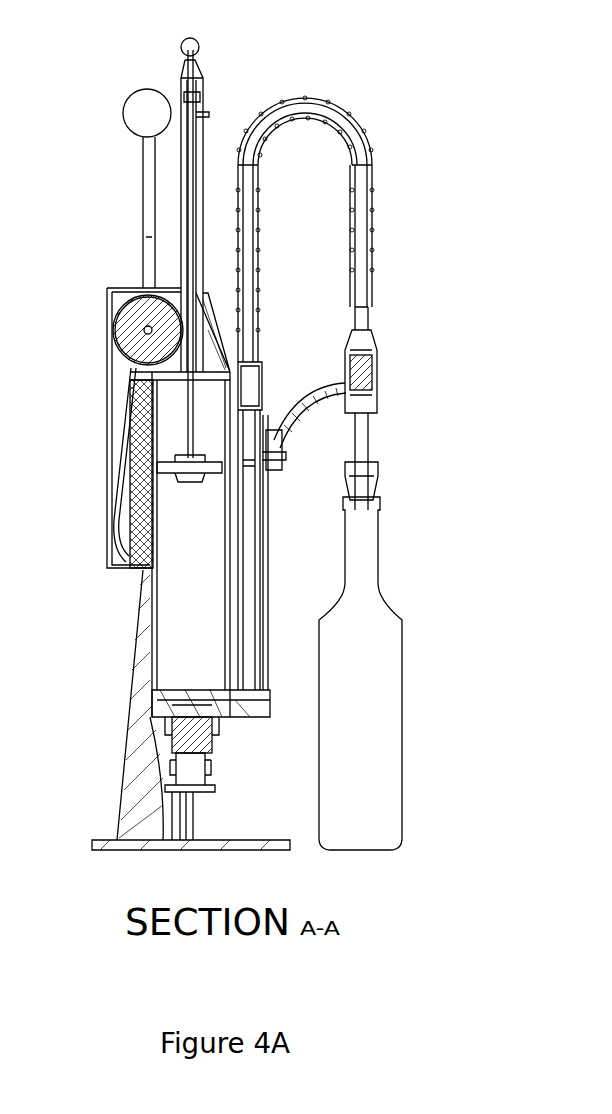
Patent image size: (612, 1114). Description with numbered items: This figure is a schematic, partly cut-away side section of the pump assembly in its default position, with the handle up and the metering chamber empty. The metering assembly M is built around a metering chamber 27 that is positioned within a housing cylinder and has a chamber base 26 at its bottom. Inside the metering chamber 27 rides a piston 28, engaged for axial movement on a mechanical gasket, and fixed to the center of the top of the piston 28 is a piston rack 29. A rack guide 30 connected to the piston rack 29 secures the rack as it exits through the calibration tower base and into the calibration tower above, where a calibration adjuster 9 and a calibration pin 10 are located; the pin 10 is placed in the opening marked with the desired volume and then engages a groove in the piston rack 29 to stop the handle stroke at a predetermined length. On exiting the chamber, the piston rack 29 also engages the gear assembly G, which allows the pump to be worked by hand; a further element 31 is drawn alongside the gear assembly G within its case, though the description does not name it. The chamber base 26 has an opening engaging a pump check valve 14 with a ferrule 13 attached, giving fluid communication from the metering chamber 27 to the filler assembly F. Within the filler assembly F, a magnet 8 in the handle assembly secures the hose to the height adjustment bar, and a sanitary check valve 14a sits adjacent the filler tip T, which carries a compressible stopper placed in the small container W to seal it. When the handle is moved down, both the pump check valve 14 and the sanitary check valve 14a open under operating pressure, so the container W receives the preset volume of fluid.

The calibration adjuster 9 is at (199, 41).
The calibration pin 10 is at (208, 116).
The piston rack 29 is at (186, 430).
The piston 28 is at (195, 472).
The rack guide 30 is at (124, 340).
The lever 31 is at (112, 516).
The metering chamber 27 is at (170, 620).
The chamber base 26 is at (165, 705).
The pump check valve 14 is at (166, 745).
The ferrule 13 is at (172, 783).
The magnet 8 is at (283, 455).
The sanitary check valve 14a is at (379, 356).
The gear assembly G is at (110, 282).
The filler assembly F is at (305, 92).
The filler tip T is at (381, 487).
The small container W is at (333, 603).
The metering assembly M is at (255, 738).